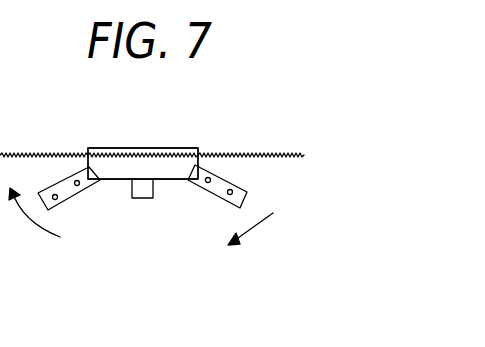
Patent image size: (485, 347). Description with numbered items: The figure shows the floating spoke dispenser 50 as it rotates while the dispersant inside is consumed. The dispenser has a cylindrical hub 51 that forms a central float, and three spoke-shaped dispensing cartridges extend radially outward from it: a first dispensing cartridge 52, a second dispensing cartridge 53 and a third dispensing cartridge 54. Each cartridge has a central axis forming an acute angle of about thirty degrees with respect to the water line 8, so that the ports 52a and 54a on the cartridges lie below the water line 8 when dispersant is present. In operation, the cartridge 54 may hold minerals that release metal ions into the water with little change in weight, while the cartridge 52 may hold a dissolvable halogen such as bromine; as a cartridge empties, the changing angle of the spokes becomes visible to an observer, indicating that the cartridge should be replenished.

The water line 8 is at (250, 147).
The floating spoke dispenser 50 is at (214, 117).
The hub 51 is at (142, 147).
The dispensing cartridge 52 is at (73, 199).
The openings 52a is at (72, 199).
The dispensing cartridge 53 is at (143, 194).
The dispensing cartridge 54 is at (235, 183).
The openings 54a is at (203, 185).